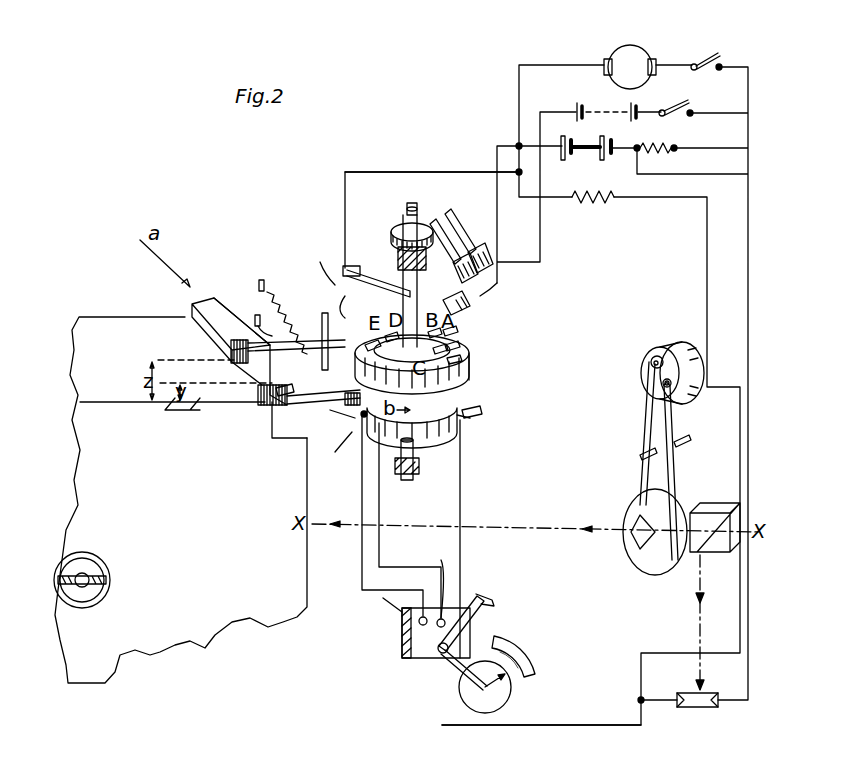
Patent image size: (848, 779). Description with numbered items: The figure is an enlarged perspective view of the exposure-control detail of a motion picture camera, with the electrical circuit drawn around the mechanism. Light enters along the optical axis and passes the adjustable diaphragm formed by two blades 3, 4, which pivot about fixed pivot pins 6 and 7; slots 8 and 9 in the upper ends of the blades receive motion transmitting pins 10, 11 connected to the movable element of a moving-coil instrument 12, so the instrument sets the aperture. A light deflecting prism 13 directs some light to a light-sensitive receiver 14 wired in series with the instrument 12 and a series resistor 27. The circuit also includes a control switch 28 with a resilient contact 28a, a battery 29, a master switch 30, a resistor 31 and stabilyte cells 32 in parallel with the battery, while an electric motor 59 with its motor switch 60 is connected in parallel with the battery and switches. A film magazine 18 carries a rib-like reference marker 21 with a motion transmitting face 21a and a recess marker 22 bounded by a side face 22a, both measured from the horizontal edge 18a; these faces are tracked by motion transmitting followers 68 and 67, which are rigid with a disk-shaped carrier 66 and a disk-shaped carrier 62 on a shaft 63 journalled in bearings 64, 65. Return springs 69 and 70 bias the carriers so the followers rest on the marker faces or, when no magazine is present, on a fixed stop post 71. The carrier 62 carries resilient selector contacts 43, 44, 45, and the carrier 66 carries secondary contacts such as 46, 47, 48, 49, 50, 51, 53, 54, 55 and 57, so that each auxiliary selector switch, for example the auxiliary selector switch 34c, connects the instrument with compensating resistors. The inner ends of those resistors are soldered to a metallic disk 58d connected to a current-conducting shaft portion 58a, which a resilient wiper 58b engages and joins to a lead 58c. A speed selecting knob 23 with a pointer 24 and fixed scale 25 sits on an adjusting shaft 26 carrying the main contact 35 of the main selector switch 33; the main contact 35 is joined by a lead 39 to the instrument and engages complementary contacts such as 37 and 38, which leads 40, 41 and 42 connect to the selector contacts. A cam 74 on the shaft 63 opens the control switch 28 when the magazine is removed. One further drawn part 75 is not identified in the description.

The diaphragm blade 3 is at (648, 505).
The diaphragm blade 4 is at (674, 520).
The fixed pivot pin 6 is at (640, 456).
The fixed pivot pin 7 is at (690, 438).
The slot 8 is at (663, 389).
The slot 9 is at (653, 362).
The motion transmitting pin 10 is at (662, 383).
The motion transmitting pin 11 is at (654, 357).
The moving-coil instrument 12 is at (684, 339).
The light deflecting prism 13 is at (736, 515).
The light-sensitive receiver 14 is at (684, 708).
The film magazine 18 is at (167, 638).
The horizontal edge 18a is at (117, 400).
The reference marker 21 is at (205, 300).
The motion transmitting face 21a is at (230, 350).
The reference marker 22 is at (290, 430).
The side face 22a is at (262, 406).
The speed selecting knob 23 is at (488, 712).
The pointer 24 is at (507, 680).
The fixed scale 25 is at (522, 662).
The adjusting shaft 26 is at (452, 672).
The series resistor 27 is at (595, 201).
The control switch 28 is at (458, 222).
The resilient contact 28a is at (470, 246).
The battery 29 is at (585, 91).
The master switch 30 is at (672, 104).
The resistor 31 is at (668, 141).
The stabilyte cell 32 is at (577, 155).
The main selector switch 33 is at (418, 655).
The auxiliary selector switch 34c is at (478, 342).
The main contact 35 is at (490, 604).
The complementary contact 37 is at (440, 579).
The complementary contact 38 is at (402, 628).
The lead 39 is at (612, 726).
The lead 40 is at (461, 518).
The lead 41 is at (382, 503).
The lead 42 is at (360, 540).
The selector contact 43 is at (468, 372).
The selector contact 44 is at (340, 292).
The selector contact 45 is at (346, 408).
The secondary contact 46 is at (470, 302).
The secondary contact 47 is at (460, 330).
The secondary contact 48 is at (462, 346).
The secondary contact 49 is at (464, 360).
The secondary contact 50 is at (336, 328).
The secondary contact 51 is at (318, 262).
The secondary contact 53 is at (344, 268).
The secondary contact 54 is at (412, 419).
The secondary contact 55 is at (362, 418).
The secondary contact 57 is at (330, 410).
The current-conducting shaft portion 58a is at (497, 283).
The resilient wiper 58b is at (347, 264).
The lead 58c is at (403, 171).
The metallic disk 58d is at (335, 452).
The electric motor 59 is at (648, 52).
The motor switch 60 is at (704, 58).
The disk-shaped carrier 62 is at (462, 434).
The shaft 63 is at (414, 446).
The bearing 64 is at (398, 258).
The bearing 65 is at (416, 470).
The second disk-shaped carrier 66 is at (295, 388).
The motion transmitting follower 67 is at (275, 430).
The motion transmitting follower 68 is at (257, 313).
The return spring 69 is at (248, 316).
The return spring 70 is at (262, 279).
The fixed stop post 71 is at (294, 323).
The cam 74 is at (418, 210).
The pin 75 is at (482, 411).